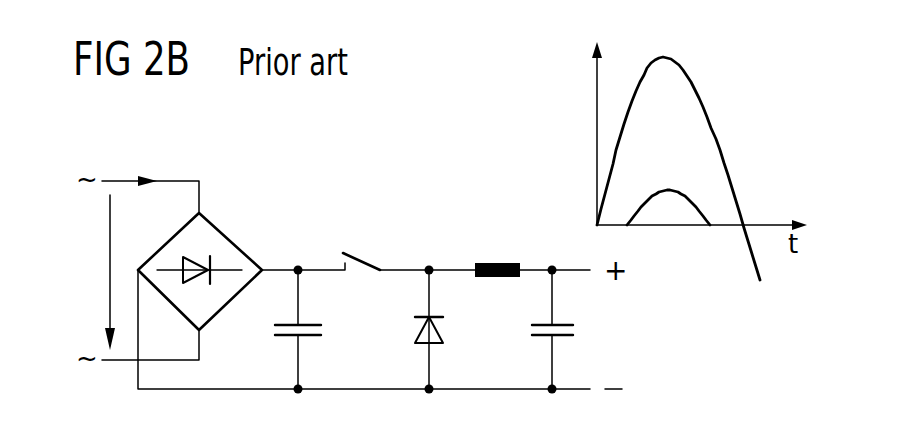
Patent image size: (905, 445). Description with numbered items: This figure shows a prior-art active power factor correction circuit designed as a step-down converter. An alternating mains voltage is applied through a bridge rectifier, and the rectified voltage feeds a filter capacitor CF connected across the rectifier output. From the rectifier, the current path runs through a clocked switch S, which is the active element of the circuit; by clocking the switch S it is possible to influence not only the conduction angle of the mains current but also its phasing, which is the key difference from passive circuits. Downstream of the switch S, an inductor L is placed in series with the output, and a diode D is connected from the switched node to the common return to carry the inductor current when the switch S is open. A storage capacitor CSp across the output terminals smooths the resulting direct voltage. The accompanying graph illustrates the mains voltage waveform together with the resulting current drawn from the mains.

The clocked switch S is at (363, 260).
The inductor L is at (497, 263).
The diode D is at (438, 327).
The filter capacitor CF is at (323, 328).
The storage capacitor CSp is at (575, 328).